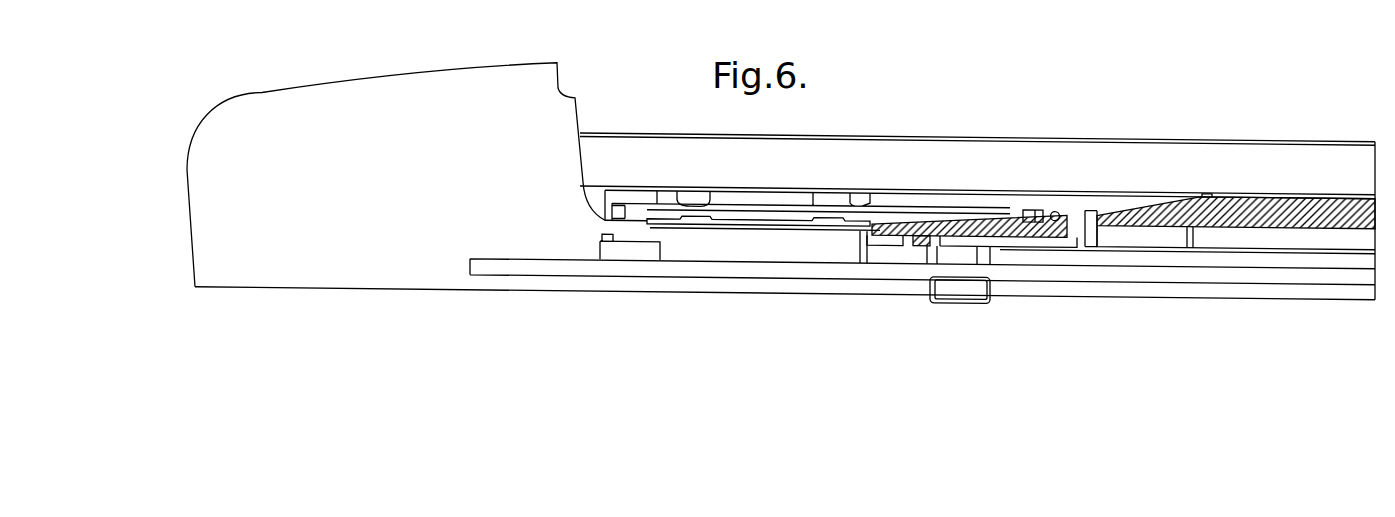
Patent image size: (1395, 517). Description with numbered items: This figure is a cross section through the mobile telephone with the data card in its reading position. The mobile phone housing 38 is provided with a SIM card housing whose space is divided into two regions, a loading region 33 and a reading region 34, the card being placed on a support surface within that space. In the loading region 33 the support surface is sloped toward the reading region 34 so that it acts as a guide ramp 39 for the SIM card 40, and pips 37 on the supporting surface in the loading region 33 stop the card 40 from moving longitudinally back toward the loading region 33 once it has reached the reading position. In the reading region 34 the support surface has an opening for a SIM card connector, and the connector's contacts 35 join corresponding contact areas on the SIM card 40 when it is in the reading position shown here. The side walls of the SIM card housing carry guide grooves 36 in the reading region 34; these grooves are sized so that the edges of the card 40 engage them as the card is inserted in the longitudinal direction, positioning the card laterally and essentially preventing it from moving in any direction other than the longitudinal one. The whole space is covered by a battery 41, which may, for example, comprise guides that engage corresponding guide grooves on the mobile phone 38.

The loading region 33 is at (1088, 208).
The reading region 34 is at (762, 226).
The contacts 35 is at (711, 228).
The guide grooves 36 is at (681, 206).
The pips 37 is at (1058, 205).
The mobile phone housing 38 is at (487, 63).
The guide ramp 39 is at (1147, 203).
The SIM card 40 is at (950, 211).
The battery 41 is at (1042, 152).